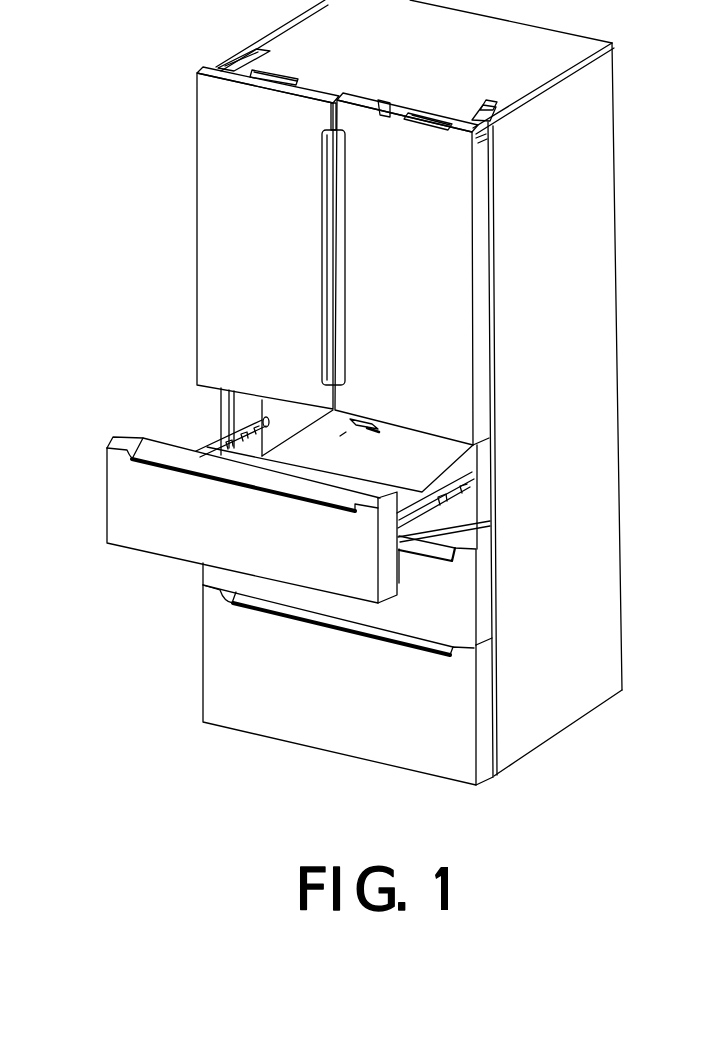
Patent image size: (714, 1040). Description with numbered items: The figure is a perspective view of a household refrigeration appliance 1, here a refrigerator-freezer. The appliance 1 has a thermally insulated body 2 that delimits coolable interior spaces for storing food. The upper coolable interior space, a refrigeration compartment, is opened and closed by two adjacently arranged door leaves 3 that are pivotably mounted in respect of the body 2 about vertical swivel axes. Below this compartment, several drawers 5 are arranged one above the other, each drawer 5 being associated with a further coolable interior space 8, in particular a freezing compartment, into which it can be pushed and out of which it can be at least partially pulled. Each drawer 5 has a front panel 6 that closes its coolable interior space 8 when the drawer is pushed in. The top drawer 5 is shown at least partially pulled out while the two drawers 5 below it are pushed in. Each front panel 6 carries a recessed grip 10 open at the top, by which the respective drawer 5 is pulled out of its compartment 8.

The household refrigeration appliance 1 is at (101, 192).
The thermally insulated body 2 is at (598, 448).
The door leaves 3 is at (257, 254).
The drawers 5 is at (112, 389).
The front panel 6 is at (80, 495).
The coolable interior spaces 8 is at (272, 422).
The recessed grip 10 is at (168, 457).